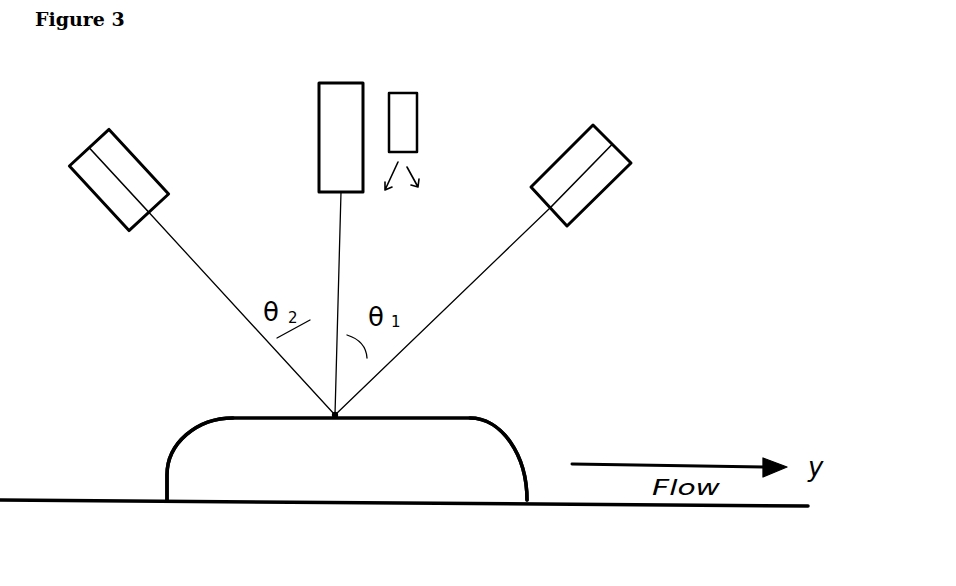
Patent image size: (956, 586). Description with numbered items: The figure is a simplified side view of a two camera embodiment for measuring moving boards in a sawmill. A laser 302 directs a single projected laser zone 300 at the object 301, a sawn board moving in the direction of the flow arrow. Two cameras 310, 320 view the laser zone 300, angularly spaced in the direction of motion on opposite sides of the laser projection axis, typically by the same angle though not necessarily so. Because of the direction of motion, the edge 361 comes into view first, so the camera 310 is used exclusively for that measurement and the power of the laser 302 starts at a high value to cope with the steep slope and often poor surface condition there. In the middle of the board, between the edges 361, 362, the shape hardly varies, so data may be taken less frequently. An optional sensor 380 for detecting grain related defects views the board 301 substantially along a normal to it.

The projected laser zone 300 is at (340, 413).
The object 301 is at (347, 459).
The laser 302 is at (350, 83).
The camera 310 is at (605, 190).
The camera 320 is at (128, 123).
The edge 361 is at (503, 433).
The edge 362 is at (173, 450).
The sensor 380 is at (427, 116).